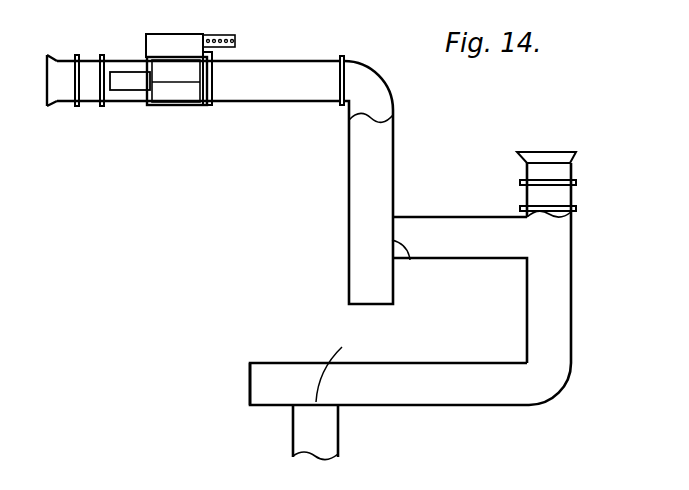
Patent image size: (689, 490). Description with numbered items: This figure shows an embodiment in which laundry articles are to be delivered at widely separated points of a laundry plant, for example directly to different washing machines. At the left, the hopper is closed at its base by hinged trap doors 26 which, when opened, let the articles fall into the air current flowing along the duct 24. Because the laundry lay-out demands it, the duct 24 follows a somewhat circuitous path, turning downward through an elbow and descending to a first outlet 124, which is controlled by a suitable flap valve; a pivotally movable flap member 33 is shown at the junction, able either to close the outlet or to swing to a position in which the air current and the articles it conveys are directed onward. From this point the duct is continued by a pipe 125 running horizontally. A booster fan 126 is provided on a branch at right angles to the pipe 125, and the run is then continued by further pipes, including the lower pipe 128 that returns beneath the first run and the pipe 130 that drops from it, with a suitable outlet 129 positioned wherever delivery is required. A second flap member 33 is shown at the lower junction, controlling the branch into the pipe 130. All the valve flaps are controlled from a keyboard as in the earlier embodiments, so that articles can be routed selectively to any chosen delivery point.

The duct 24 is at (287, 96).
The hinged trap doors 26 is at (170, 96).
The flap member 33 is at (410, 260).
The first outlet 124 is at (353, 290).
The pipe 125 is at (450, 222).
The booster fan 126 is at (527, 171).
The pipe 128 is at (478, 398).
The outlet 129 is at (267, 399).
The pipe 130 is at (338, 440).